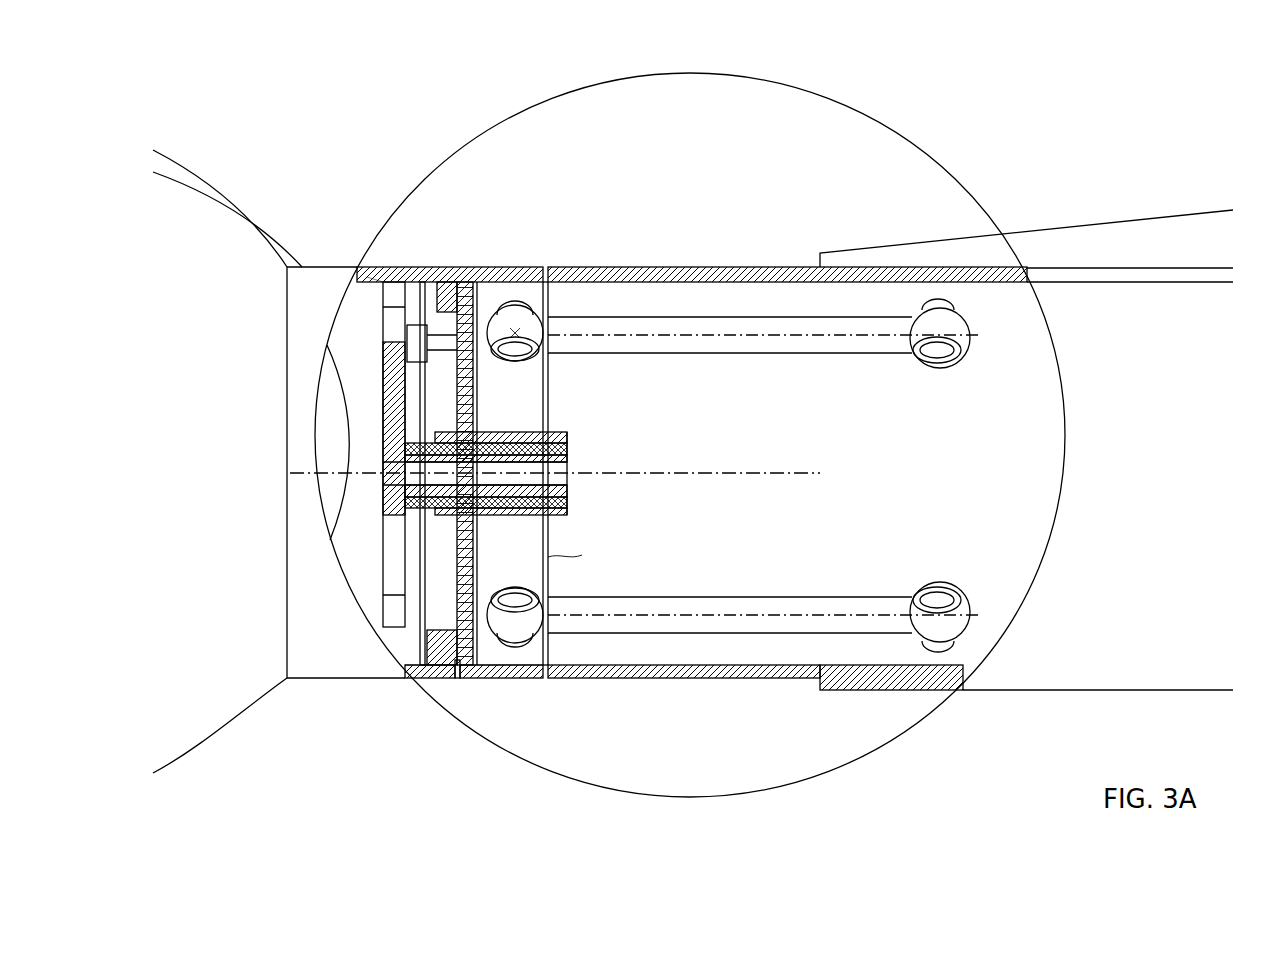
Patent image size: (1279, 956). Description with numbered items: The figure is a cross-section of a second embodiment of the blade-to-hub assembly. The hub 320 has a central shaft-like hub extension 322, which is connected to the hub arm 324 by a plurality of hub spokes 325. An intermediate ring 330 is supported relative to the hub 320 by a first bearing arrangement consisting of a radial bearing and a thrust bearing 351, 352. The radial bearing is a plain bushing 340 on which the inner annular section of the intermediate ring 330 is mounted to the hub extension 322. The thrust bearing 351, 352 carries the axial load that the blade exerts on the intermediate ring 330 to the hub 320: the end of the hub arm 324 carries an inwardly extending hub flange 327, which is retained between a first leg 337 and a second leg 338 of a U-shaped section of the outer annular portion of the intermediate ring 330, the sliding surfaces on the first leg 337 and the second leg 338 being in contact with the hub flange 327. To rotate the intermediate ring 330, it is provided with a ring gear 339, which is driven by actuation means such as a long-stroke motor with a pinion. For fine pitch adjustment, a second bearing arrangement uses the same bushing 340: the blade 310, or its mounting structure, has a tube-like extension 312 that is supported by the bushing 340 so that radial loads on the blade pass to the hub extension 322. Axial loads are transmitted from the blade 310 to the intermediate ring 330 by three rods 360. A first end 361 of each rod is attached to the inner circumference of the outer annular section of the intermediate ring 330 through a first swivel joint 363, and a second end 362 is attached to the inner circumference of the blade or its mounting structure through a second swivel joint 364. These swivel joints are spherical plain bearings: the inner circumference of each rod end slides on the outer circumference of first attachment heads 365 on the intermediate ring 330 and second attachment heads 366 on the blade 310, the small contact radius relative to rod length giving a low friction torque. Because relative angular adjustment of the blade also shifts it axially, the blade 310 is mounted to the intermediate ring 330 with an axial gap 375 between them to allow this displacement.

The blade 310 is at (1115, 237).
The tube-like extension 312 is at (570, 433).
The hub 320 is at (279, 461).
The hub extension 322 is at (418, 470).
The hub arm 324 is at (370, 276).
The hub spokes 325 is at (383, 395).
The hub flange 327 is at (463, 678).
The intermediate ring 330 is at (496, 262).
The first leg 337 is at (410, 668).
The second leg 338 is at (497, 679).
The ring gear 339 is at (552, 558).
The bushing 340 is at (569, 499).
The thrust bearing 351 is at (432, 270).
The thrust bearing 352 is at (457, 267).
The rods 360 is at (828, 345).
The first end 361 is at (549, 316).
The second end 362 is at (965, 334).
The first swivel joint 363 is at (549, 335).
The second swivel joint 364 is at (966, 362).
The first attachment heads 365 is at (551, 383).
The second attachment heads 366 is at (550, 580).
The axial gap 375 is at (559, 689).